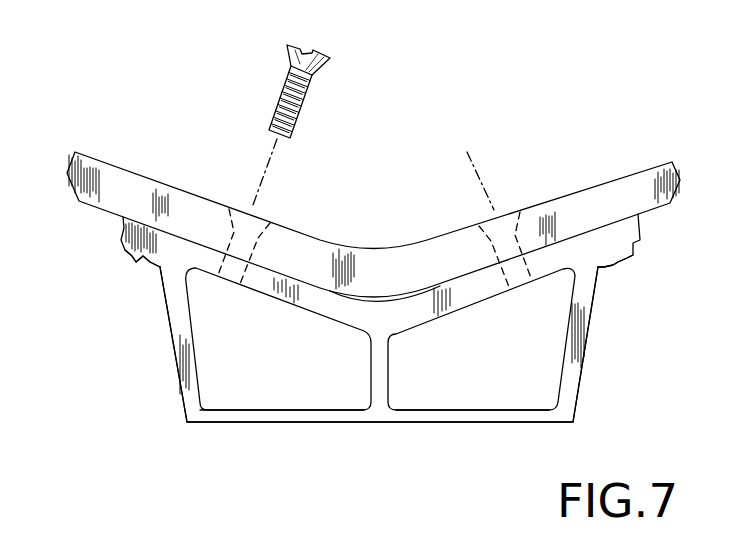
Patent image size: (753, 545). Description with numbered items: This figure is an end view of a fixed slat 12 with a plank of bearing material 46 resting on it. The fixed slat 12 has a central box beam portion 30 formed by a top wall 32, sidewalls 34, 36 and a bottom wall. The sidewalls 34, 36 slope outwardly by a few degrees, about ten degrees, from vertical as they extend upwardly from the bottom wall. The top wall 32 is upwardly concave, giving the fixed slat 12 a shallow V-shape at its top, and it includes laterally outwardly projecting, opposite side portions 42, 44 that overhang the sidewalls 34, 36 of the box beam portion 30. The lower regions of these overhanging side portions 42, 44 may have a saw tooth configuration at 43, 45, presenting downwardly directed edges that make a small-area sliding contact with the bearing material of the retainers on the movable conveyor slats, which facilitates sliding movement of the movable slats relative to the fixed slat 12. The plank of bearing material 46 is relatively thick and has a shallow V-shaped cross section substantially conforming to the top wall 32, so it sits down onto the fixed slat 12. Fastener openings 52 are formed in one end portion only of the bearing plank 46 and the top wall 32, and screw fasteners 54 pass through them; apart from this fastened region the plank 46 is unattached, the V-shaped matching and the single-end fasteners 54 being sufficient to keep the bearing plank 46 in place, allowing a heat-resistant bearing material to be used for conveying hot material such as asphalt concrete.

The fixed slat 12 is at (324, 442).
The central box beam portion 30 is at (500, 412).
The top wall 32 is at (459, 307).
The sidewall 34 is at (176, 341).
The sidewall 36 is at (583, 352).
The side portion 42 is at (122, 235).
The saw tooth configuration 43 is at (138, 266).
The side portion 44 is at (638, 238).
The saw tooth configuration 45 is at (623, 262).
The plank of bearing material 46 is at (397, 246).
The fastener openings 52 is at (232, 208).
The screw fasteners 54 is at (300, 110).